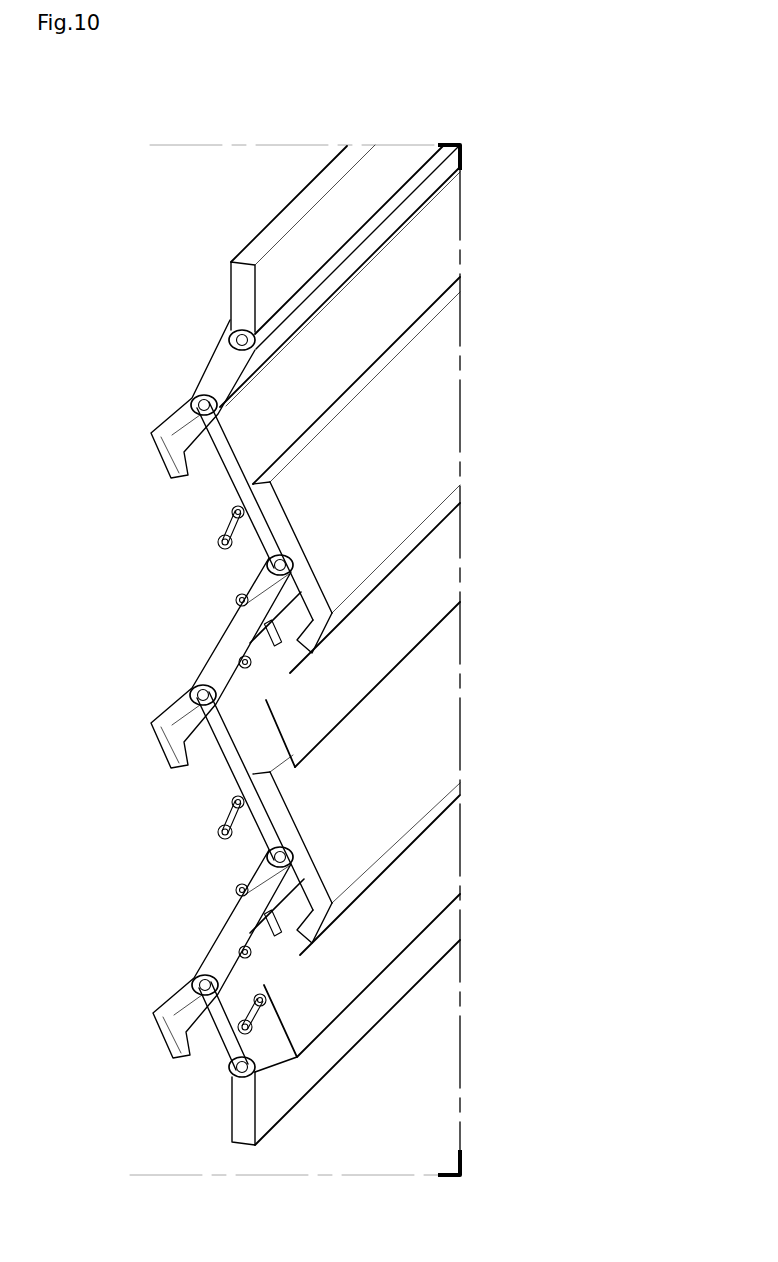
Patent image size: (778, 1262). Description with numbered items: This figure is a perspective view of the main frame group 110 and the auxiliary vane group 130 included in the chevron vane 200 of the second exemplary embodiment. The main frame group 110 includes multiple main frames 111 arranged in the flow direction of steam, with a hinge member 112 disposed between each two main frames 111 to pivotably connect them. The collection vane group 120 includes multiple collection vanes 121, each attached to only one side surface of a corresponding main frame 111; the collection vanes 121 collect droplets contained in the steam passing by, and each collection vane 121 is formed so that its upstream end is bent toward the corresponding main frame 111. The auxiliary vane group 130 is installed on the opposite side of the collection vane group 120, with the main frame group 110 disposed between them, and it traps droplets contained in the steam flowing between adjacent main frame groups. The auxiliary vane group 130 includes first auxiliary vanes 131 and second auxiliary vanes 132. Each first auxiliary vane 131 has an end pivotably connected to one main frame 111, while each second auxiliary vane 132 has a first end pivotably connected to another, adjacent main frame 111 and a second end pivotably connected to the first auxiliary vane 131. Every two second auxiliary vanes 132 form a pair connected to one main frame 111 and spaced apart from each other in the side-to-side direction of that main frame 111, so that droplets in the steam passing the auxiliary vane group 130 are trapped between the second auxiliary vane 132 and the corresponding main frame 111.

The chevron vane 200 is at (112, 94).
The main frame group 110 is at (570, 362).
The main frame 111 is at (332, 363).
The hinge member 112 is at (300, 580).
The collection vane group 120 is at (440, 693).
The collection vane 121 is at (422, 762).
The auxiliary vane group 130 is at (433, 970).
The first auxiliary vane 131 is at (202, 813).
The second auxiliary vane 132 is at (227, 523).